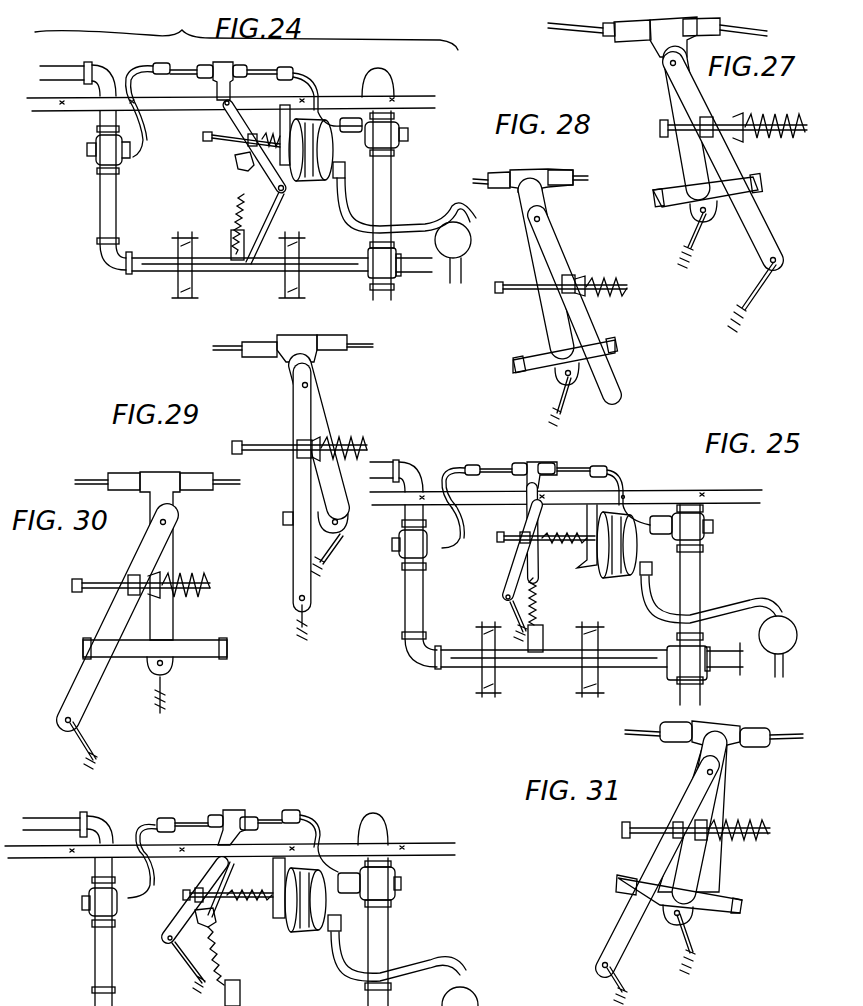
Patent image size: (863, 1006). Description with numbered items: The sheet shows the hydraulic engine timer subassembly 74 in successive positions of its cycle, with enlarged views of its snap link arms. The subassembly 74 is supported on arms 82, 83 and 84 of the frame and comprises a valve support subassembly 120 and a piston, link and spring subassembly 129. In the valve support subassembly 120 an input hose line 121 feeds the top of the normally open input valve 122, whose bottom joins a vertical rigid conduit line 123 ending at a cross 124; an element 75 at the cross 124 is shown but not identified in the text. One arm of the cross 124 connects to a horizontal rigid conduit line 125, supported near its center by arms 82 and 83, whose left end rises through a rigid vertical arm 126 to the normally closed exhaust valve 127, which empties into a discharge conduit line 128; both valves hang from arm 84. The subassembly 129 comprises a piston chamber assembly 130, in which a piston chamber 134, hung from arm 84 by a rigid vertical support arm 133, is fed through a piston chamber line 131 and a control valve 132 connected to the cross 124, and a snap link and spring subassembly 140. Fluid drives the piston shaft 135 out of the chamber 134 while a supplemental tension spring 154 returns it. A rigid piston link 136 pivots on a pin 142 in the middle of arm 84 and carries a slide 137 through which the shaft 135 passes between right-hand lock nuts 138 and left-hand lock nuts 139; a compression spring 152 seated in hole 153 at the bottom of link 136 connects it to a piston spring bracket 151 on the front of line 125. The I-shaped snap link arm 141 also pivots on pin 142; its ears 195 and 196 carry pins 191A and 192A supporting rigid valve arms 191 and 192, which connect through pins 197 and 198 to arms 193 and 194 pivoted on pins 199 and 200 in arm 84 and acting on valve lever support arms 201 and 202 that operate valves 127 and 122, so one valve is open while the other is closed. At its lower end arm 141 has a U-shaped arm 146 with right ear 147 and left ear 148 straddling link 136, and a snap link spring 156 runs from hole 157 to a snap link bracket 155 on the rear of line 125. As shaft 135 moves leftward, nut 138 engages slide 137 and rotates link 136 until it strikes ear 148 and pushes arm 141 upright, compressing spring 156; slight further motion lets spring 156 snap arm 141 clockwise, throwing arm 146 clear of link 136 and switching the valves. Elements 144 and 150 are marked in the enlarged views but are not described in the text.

In FIG. 24, the engine timer subassembly 74 is at (72, 221).
In FIG. 26, the engine timer subassembly 74 is at (84, 974).
In FIG. 25, the outlet pipe 75 is at (737, 667).
In FIG. 24, the frame arm 82 is at (175, 290).
In FIG. 25, the frame arm 82 is at (478, 673).
In FIG. 24, the frame arm 83 is at (283, 293).
In FIG. 25, the frame arm 83 is at (587, 683).
In FIG. 24, the frame arm 84 is at (418, 100).
In FIG. 25, the frame arm 84 is at (758, 498).
In FIG. 26, the frame arm 84 is at (430, 850).
In FIG. 24, the valve support subassembly 120 is at (246, 30).
In FIG. 25, the valve support subassembly 120 is at (391, 655).
In FIG. 24, the input hose line 121 is at (378, 82).
In FIG. 26, the input hose line 121 is at (387, 833).
In FIG. 24, the input valve 122 is at (408, 131).
In FIG. 25, the input valve 122 is at (707, 543).
In FIG. 26, the input valve 122 is at (403, 895).
In FIG. 24, the vertical rigid conduit line 123 is at (393, 183).
In FIG. 25, the vertical rigid conduit line 123 is at (690, 605).
In FIG. 26, the vertical rigid conduit line 123 is at (378, 932).
In FIG. 24, the cross 124 is at (407, 268).
In FIG. 25, the cross 124 is at (687, 663).
In FIG. 24, the horizontal rigid conduit line 125 is at (343, 268).
In FIG. 24, the rigid vertical arm 126 is at (100, 230).
In FIG. 24, the exhaust valve 127 is at (92, 150).
In FIG. 25, the exhaust valve 127 is at (400, 598).
In FIG. 26, the exhaust valve 127 is at (93, 912).
In FIG. 25, the discharge conduit line 128 is at (377, 463).
In FIG. 26, the discharge conduit line 128 is at (70, 814).
In FIG. 26, the piston and link and spring subassembly 129 is at (330, 963).
In FIG. 25, the piston chamber assembly 130 is at (732, 595).
In FIG. 26, the piston chamber assembly 130 is at (323, 930).
In FIG. 24, the piston chamber line 131 is at (406, 205).
In FIG. 25, the piston chamber line 131 is at (663, 620).
In FIG. 26, the piston chamber line 131 is at (415, 965).
In FIG. 24, the piston chamber line control valve 132 is at (467, 250).
In FIG. 25, the piston chamber line control valve 132 is at (780, 623).
In FIG. 26, the piston chamber line control valve 132 is at (477, 992).
In FIG. 24, the rigid vertical support arm 133 is at (285, 128).
In FIG. 25, the rigid vertical support arm 133 is at (587, 568).
In FIG. 26, the rigid vertical support arm 133 is at (273, 878).
In FIG. 24, the piston chamber 134 is at (317, 187).
In FIG. 25, the piston chamber 134 is at (620, 582).
In FIG. 24, the piston shaft 135 is at (223, 140).
In FIG. 27, the piston shaft 135 is at (803, 138).
In FIG. 30, the piston shaft 135 is at (125, 582).
In FIG. 27, the piston link 136 is at (758, 213).
In FIG. 28, the piston link 136 is at (615, 377).
In FIG. 29, the piston link 136 is at (300, 568).
In FIG. 30, the piston link 136 is at (80, 683).
In FIG. 31, the piston link 136 is at (660, 857).
In FIG. 24, the slide 137 is at (252, 140).
In FIG. 27, the slide 137 is at (710, 118).
In FIG. 28, the slide 137 is at (568, 275).
In FIG. 29, the slide 137 is at (297, 440).
In FIG. 30, the slide 137 is at (134, 585).
In FIG. 31, the slide 137 is at (678, 830).
In FIG. 24, the right-hand adjustment lock nuts 138 is at (271, 140).
In FIG. 27, the right-hand adjustment lock nuts 138 is at (743, 118).
In FIG. 28, the right-hand adjustment lock nuts 138 is at (588, 270).
In FIG. 29, the right-hand adjustment lock nuts 138 is at (320, 440).
In FIG. 30, the right-hand adjustment lock nuts 138 is at (179, 585).
In FIG. 31, the right-hand adjustment lock nuts 138 is at (703, 817).
In FIG. 27, the left-hand adjustment lock nuts 139 is at (660, 128).
In FIG. 28, the left-hand adjustment lock nuts 139 is at (500, 293).
In FIG. 29, the left-hand adjustment lock nuts 139 is at (299, 447).
In FIG. 31, the left-hand adjustment lock nuts 139 is at (625, 818).
In FIG. 25, the snap link and spring subassembly 140 is at (478, 607).
In FIG. 26, the snap link and spring subassembly 140 is at (231, 916).
In FIG. 24, the snap link arm 141 is at (230, 81).
In FIG. 27, the snap link arm 141 is at (686, 123).
In FIG. 28, the snap link arm 141 is at (552, 320).
In FIG. 29, the snap link arm 141 is at (312, 455).
In FIG. 30, the snap link arm 141 is at (163, 630).
In FIG. 25, the snap link arm 141 is at (532, 463).
In FIG. 26, the snap link arm 141 is at (250, 790).
In FIG. 31, the snap link arm 141 is at (693, 872).
In FIG. 24, the pin 142 is at (224, 104).
In FIG. 27, the pin 142 is at (670, 67).
In FIG. 28, the pin 142 is at (540, 218).
In FIG. 29, the pin 142 is at (313, 388).
In FIG. 30, the pin 142 is at (167, 523).
In FIG. 24, the link 144 is at (240, 169).
In FIG. 27, the link 144 is at (593, 81).
In FIG. 27, the U-shaped arm 146 is at (672, 207).
In FIG. 30, the U-shaped arm 146 is at (187, 652).
In FIG. 31, the U-shaped arm 146 is at (732, 902).
In FIG. 30, the right ear 147 is at (212, 642).
In FIG. 31, the right ear 147 is at (742, 912).
In FIG. 28, the left ear 148 is at (518, 373).
In FIG. 29, the left ear 148 is at (283, 515).
In FIG. 31, the left ear 148 is at (618, 882).
In FIG. 27, the cable end 150 is at (688, 20).
In FIG. 24, the piston spring bracket 151 is at (237, 270).
In FIG. 25, the piston spring bracket 151 is at (538, 655).
In FIG. 26, the piston spring bracket 151 is at (232, 993).
In FIG. 27, the piston spring 152 is at (737, 318).
In FIG. 30, the piston spring 152 is at (95, 762).
In FIG. 25, the piston spring 152 is at (508, 612).
In FIG. 26, the piston spring 152 is at (202, 982).
In FIG. 31, the piston spring 152 is at (625, 993).
In FIG. 27, the hole 153 is at (777, 267).
In FIG. 25, the supplemental tension spring 154 is at (580, 532).
In FIG. 26, the supplemental tension spring 154 is at (228, 895).
In FIG. 31, the supplemental tension spring 154 is at (760, 845).
In FIG. 25, the snap link bracket 155 is at (545, 638).
In FIG. 24, the snap link spring 156 is at (238, 208).
In FIG. 27, the snap link spring 156 is at (682, 263).
In FIG. 30, the snap link spring 156 is at (165, 703).
In FIG. 25, the snap link spring 156 is at (550, 603).
In FIG. 31, the snap link spring 156 is at (703, 966).
In FIG. 27, the hole 157 is at (707, 220).
In FIG. 30, the hole 157 is at (158, 663).
In FIG. 31, the hole 157 is at (677, 918).
In FIG. 24, the exhaust valve arm 191 is at (182, 78).
In FIG. 27, the exhaust valve arm 191 is at (572, 32).
In FIG. 29, the exhaust valve arm 191 is at (208, 340).
In FIG. 25, the exhaust valve arm 191 is at (496, 469).
In FIG. 26, the exhaust valve arm 191 is at (200, 817).
In FIG. 31, the exhaust valve arm 191 is at (630, 742).
In FIG. 31, the pin 191A is at (688, 738).
In FIG. 27, the inlet valve arm 192 is at (760, 23).
In FIG. 29, the inlet valve arm 192 is at (378, 347).
In FIG. 25, the inlet valve arm 192 is at (570, 462).
In FIG. 26, the inlet valve arm 192 is at (268, 817).
In FIG. 31, the inlet valve arm 192 is at (797, 735).
In FIG. 31, the pin 192A is at (747, 748).
In FIG. 24, the exhaust valve arm 193 is at (128, 78).
In FIG. 25, the exhaust valve arm 193 is at (453, 488).
In FIG. 26, the exhaust valve arm 193 is at (150, 823).
In FIG. 24, the inlet valve arm 194 is at (308, 88).
In FIG. 25, the inlet valve arm 194 is at (627, 480).
In FIG. 26, the inlet valve arm 194 is at (320, 817).
In FIG. 27, the left ear 195 is at (640, 45).
In FIG. 27, the right ear 196 is at (687, 32).
In FIG. 26, the pin 197 is at (158, 817).
In FIG. 25, the pin 198 is at (605, 466).
In FIG. 25, the pin 199 is at (458, 498).
In FIG. 26, the pin 199 is at (143, 853).
In FIG. 25, the pin 200 is at (624, 497).
In FIG. 25, the valve lever support arm 201 is at (407, 531).
In FIG. 26, the valve lever support arm 201 is at (120, 868).
In FIG. 25, the valve lever support arm 202 is at (713, 517).
In FIG. 26, the valve lever support arm 202 is at (387, 867).